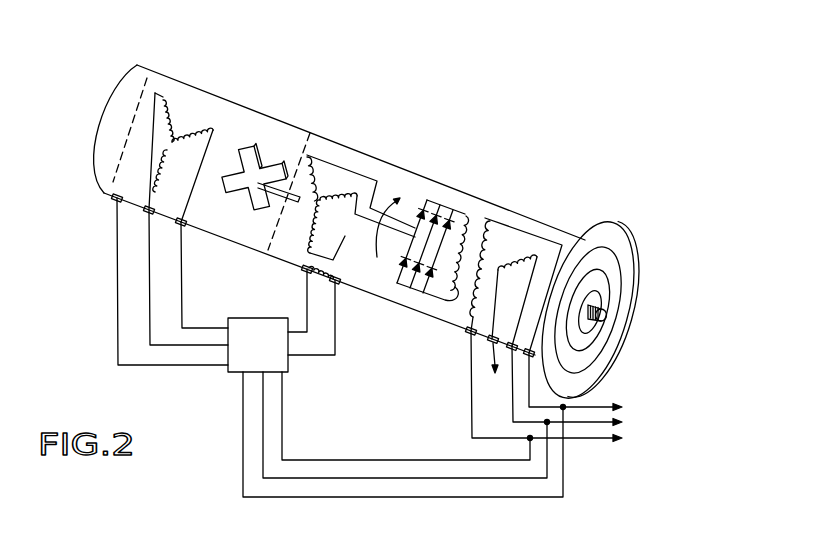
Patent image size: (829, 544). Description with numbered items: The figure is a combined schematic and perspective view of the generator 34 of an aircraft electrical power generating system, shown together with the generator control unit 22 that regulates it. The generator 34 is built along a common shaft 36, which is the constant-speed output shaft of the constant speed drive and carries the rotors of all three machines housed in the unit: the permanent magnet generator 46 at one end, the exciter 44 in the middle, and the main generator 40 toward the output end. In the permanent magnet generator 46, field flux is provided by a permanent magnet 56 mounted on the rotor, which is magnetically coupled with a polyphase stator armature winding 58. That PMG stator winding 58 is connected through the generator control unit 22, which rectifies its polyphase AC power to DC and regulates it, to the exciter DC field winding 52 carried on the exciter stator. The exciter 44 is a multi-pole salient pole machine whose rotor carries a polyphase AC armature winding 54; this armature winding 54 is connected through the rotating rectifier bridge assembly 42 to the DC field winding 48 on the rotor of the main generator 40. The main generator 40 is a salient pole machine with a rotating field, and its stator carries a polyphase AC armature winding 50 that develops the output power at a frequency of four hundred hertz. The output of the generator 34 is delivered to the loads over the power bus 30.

The generator control unit 22 is at (243, 319).
The power bus 30 is at (628, 398).
The generator 34 is at (502, 112).
The output shaft 36 is at (612, 313).
The main generator 40 is at (566, 223).
The rotating rectifier bridge assembly 42 is at (439, 196).
The exciter 44 is at (394, 160).
The permanent magnet generator 46 is at (309, 121).
The DC field winding 48 is at (463, 283).
The polyphase AC armature winding 50 is at (522, 240).
The exciter DC field winding 52 is at (333, 268).
The exciter armature winding 54 is at (327, 183).
The permanent magnet 56 is at (244, 170).
The PMG stator armature winding 58 is at (177, 128).